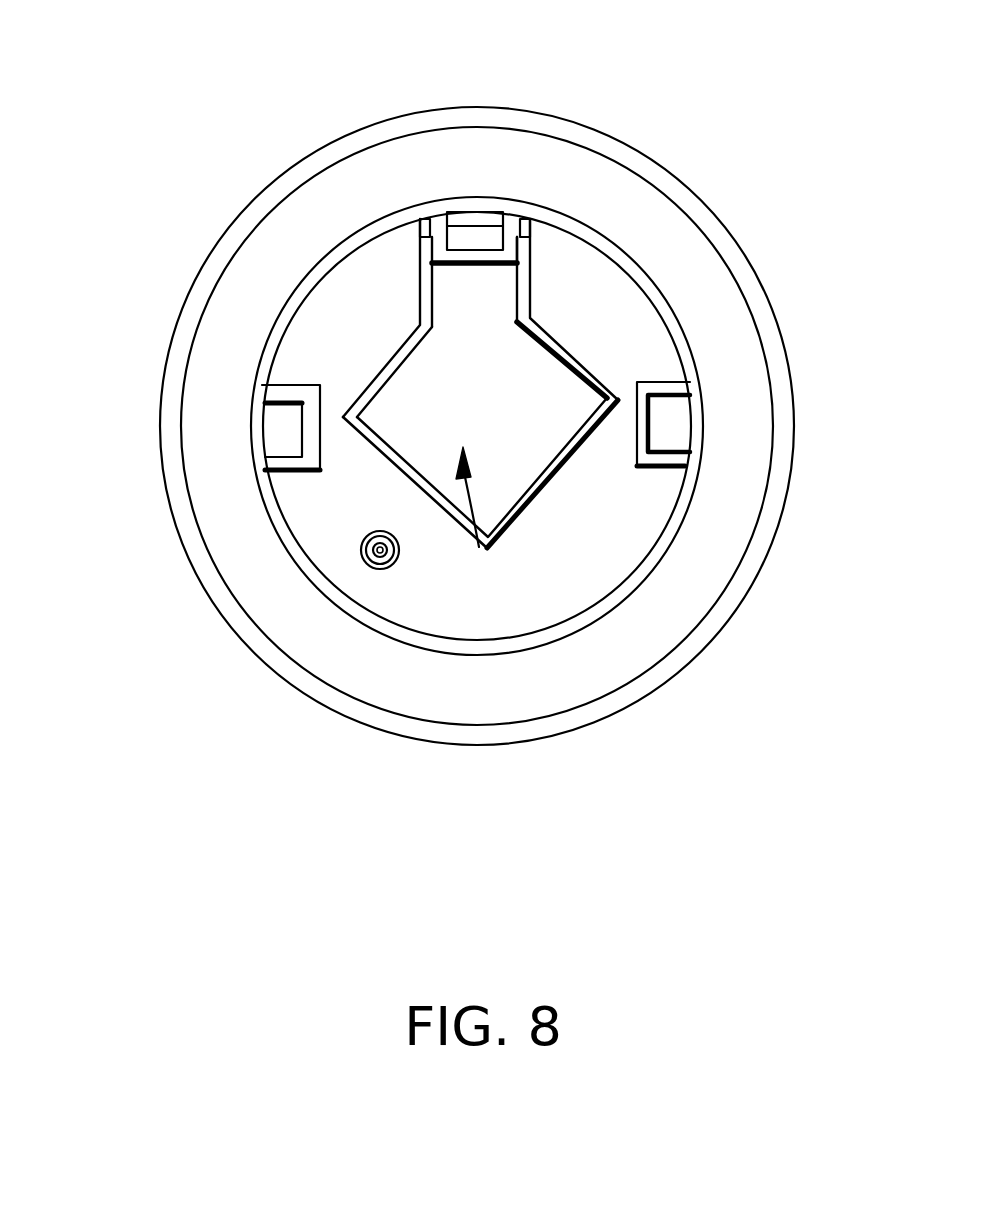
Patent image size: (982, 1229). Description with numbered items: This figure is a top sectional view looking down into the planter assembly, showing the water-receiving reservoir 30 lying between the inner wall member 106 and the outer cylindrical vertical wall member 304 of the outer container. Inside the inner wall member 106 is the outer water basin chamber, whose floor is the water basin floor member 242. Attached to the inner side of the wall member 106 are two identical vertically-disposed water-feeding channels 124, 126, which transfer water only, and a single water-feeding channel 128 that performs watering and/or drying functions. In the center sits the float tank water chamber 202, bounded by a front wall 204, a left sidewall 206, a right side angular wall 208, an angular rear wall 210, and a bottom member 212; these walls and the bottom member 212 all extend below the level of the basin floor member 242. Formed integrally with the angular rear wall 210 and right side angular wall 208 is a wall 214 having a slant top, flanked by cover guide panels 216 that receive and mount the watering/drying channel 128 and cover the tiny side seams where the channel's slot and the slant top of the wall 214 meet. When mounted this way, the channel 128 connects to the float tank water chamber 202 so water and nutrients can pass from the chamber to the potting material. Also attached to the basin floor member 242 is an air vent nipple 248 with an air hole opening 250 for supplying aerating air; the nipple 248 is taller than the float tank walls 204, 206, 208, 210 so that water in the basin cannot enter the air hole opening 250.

The water-receiving reservoir 30 is at (637, 198).
The outer cylindrical vertical wall member 304 is at (195, 540).
The wall member 106 is at (332, 257).
The water basin floor member 242 is at (427, 625).
The water-feeding channel 124 is at (318, 415).
The water-feeding channel 126 is at (660, 462).
The float tank water chamber 202 is at (484, 552).
The front wall 204 is at (533, 498).
The left sidewall 206 is at (396, 473).
The right side angular wall 208 is at (530, 322).
The angular rear wall 210 is at (401, 352).
The bottom member 212 is at (410, 432).
The wall 214 is at (478, 218).
The cover guide panels 216 is at (418, 217).
The water-feeding channel 128 is at (508, 228).
The air vent nipple 248 is at (362, 563).
The air hole opening 250 is at (373, 565).